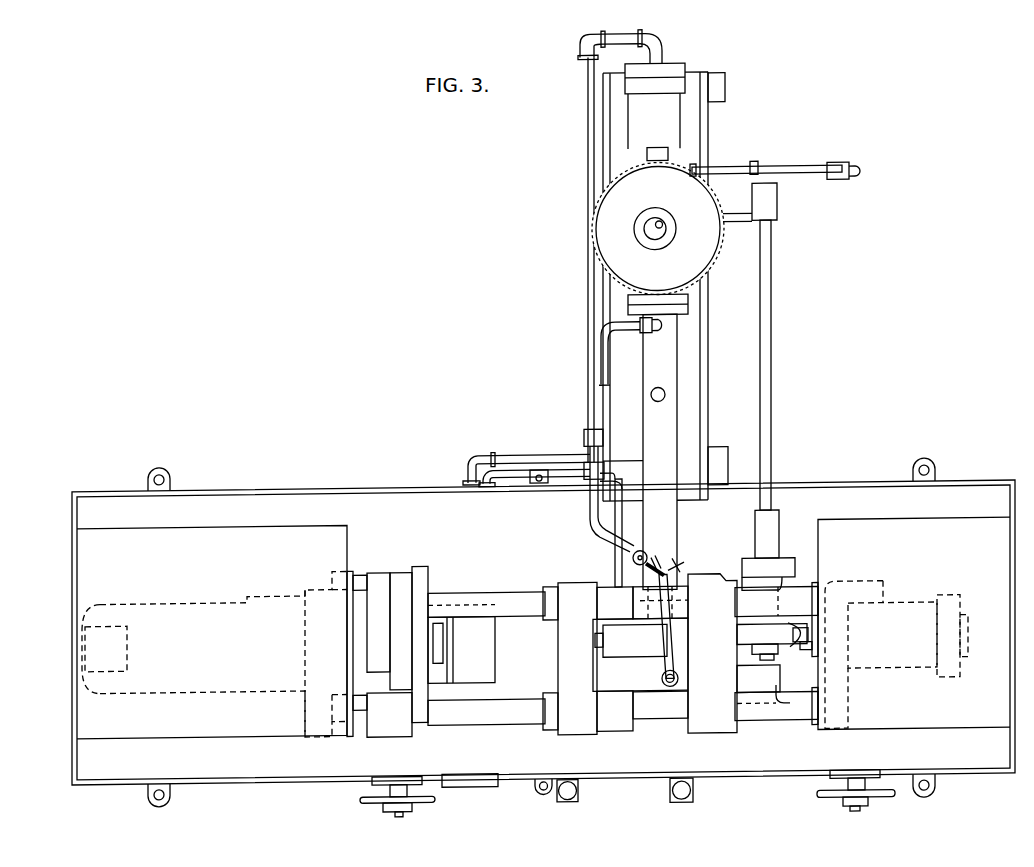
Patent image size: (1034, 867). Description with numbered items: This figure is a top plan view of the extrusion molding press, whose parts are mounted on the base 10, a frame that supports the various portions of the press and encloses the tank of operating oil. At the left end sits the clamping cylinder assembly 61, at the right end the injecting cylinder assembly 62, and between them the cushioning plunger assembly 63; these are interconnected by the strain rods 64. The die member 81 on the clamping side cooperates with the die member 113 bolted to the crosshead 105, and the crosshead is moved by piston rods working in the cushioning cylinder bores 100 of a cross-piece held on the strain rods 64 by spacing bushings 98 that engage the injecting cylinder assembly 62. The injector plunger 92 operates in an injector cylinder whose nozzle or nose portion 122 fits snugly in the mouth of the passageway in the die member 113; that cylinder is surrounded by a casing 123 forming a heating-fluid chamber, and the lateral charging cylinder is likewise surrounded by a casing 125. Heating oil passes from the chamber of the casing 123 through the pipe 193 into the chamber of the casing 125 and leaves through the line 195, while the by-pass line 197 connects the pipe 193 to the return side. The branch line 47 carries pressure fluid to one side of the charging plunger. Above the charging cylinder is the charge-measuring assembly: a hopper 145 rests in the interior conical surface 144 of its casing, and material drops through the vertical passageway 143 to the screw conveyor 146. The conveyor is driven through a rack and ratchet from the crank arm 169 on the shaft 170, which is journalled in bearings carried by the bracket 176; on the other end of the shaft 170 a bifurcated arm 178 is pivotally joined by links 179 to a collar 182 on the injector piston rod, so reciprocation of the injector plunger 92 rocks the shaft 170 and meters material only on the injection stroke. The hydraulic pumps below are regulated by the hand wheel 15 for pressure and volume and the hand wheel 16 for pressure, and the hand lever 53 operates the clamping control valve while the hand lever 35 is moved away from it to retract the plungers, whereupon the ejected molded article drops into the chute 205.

The base 10 is at (420, 486).
The hand wheel 15 is at (818, 798).
The hand wheel 16 is at (362, 800).
The hand lever 35 is at (694, 793).
The branch line 47 is at (588, 124).
The clamping control valve hand lever 53 is at (580, 793).
The clamping cylinder assembly 61 is at (205, 599).
The injecting cylinder assembly 62 is at (910, 607).
The cushioning plunger assembly 63 is at (600, 588).
The strain rods 64 is at (512, 592).
The die member 81 is at (452, 634).
The injector plunger 92 is at (748, 632).
The spacing bushings 98 is at (803, 592).
The cushioning cylinder bores 100 is at (745, 579).
The crosshead 105 is at (697, 735).
The die member 113 is at (545, 667).
The nozzle or nose portion 122 is at (598, 641).
The casing 123 is at (627, 652).
The casing 125 is at (648, 384).
The vertical passageway 143 is at (668, 226).
The interior conical surface 144 is at (672, 234).
The hopper 145 is at (600, 249).
The screw conveyor 146 is at (662, 221).
The crank arm 169 is at (754, 179).
The shaft 170 is at (771, 327).
The bracket 176 is at (776, 223).
The bifurcated arm 178 is at (808, 643).
The links 179 is at (796, 668).
The collar 182 is at (808, 656).
The pipe 193 is at (664, 641).
The line 195 is at (628, 336).
The by-pass line 197 is at (590, 506).
The chute 205 is at (495, 657).